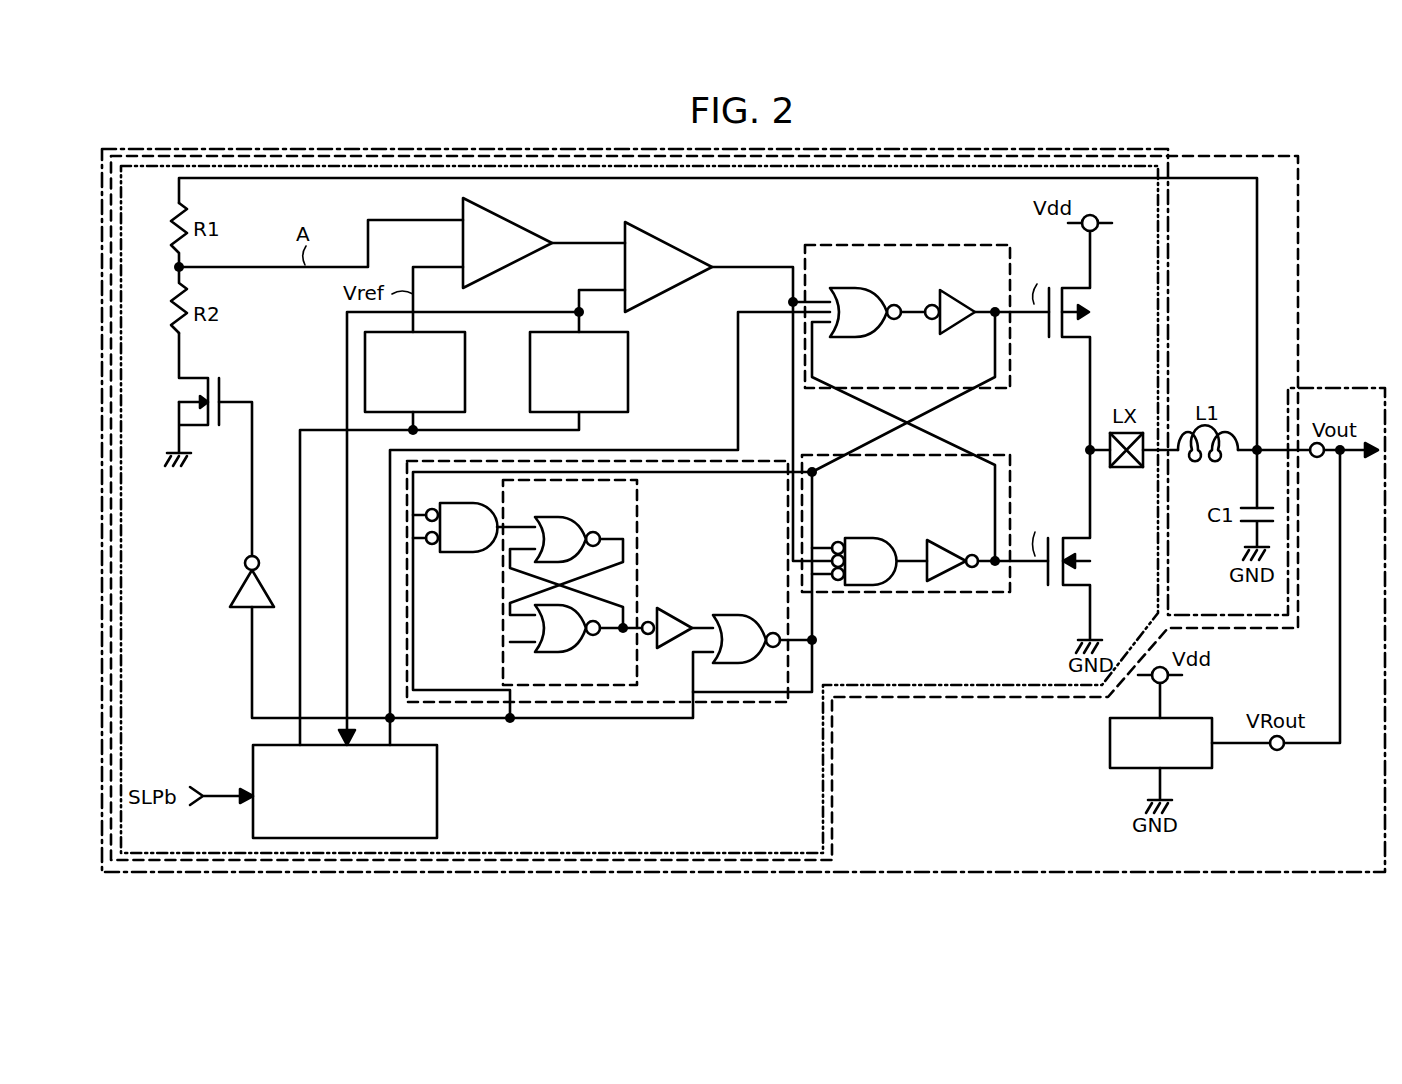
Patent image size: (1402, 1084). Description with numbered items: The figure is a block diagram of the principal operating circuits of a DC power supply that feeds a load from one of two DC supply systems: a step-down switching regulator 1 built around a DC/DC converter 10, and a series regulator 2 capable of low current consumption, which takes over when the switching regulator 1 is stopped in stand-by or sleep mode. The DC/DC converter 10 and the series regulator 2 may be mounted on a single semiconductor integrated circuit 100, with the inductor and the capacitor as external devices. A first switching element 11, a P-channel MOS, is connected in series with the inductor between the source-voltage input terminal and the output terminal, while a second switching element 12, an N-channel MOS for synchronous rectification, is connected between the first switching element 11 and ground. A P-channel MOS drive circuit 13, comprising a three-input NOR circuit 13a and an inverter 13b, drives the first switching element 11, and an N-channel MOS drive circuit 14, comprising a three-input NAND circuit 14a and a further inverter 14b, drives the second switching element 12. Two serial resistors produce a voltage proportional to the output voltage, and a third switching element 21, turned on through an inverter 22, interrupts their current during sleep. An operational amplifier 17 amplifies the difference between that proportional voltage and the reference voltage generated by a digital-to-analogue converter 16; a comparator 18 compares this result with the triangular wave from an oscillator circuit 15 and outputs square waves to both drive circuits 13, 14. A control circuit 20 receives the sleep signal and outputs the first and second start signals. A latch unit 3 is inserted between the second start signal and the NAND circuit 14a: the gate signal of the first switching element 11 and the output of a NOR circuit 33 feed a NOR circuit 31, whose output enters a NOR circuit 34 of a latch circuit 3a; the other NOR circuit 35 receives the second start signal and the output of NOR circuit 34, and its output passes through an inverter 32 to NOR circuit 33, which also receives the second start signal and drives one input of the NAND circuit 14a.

The semiconductor integrated circuit 100 is at (1045, 874).
The switching regulator 1 is at (1215, 155).
The DC/DC converter 10 is at (960, 688).
The series regulator 2 is at (1110, 745).
The latch unit 3 is at (761, 458).
The latch circuit 3a is at (638, 528).
The first switching element 11 is at (1056, 352).
The second switching element 12 is at (1050, 602).
The P-channel MOS drive circuit 13 is at (914, 244).
The three-input NOR circuit 13a is at (851, 340).
The inverter 13b is at (958, 338).
The N-channel MOS drive circuit 14 is at (905, 598).
The three-input NAND circuit 14a is at (860, 595).
The inverter 14b is at (948, 595).
The oscillator circuit 15 is at (629, 368).
The digital-to-analogue converter 16 is at (466, 368).
The operational amplifier 17 is at (537, 230).
The comparator 18 is at (697, 253).
The control circuit 20 is at (440, 796).
The third switching element 21 is at (215, 434).
The inverter 22 is at (243, 610).
The NOR circuit 31 is at (461, 556).
The inverter 32 is at (673, 652).
The NOR circuit 33 is at (745, 665).
The NOR circuit 34 is at (590, 514).
The NOR circuit 35 is at (592, 655).